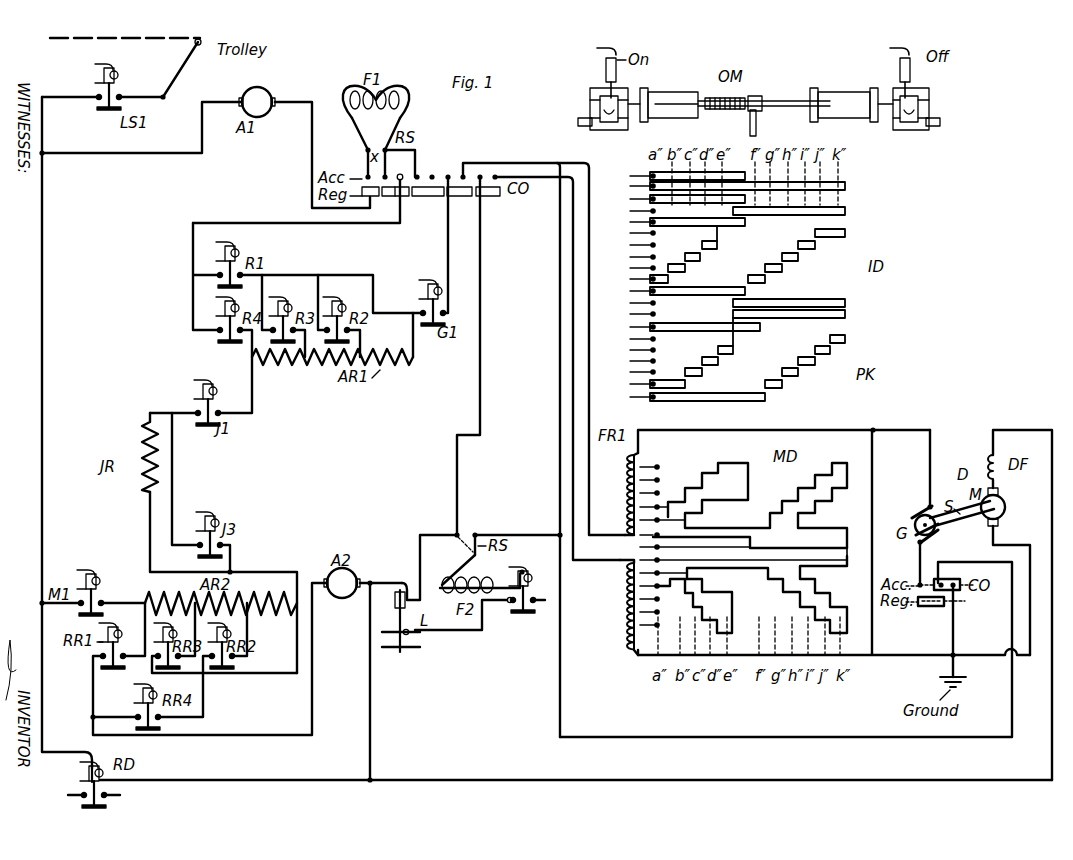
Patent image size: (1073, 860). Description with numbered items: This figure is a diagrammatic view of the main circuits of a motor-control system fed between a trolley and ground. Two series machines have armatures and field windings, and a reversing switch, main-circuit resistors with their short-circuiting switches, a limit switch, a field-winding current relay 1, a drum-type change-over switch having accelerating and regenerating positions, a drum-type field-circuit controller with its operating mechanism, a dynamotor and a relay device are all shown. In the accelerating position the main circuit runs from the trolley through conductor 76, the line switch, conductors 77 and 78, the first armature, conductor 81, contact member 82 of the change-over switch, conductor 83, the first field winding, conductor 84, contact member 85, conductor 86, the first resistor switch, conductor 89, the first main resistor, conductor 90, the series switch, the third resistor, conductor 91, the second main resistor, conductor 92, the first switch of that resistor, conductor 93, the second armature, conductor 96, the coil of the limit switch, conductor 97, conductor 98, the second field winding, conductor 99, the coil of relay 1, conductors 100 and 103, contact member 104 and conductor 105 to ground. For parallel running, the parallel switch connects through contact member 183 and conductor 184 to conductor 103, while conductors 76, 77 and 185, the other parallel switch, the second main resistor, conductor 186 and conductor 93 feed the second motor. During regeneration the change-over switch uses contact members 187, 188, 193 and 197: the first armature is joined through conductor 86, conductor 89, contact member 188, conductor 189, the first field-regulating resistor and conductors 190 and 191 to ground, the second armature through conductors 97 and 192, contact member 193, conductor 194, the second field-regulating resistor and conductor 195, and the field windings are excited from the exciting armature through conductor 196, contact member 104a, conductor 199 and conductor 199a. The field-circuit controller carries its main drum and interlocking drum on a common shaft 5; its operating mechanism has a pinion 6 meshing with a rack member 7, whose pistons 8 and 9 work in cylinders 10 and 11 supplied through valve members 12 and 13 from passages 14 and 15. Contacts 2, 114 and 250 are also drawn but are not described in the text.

The field-winding current relay 1 is at (540, 589).
The contact 2 is at (522, 598).
The shaft 5 is at (750, 122).
The pinion 6 is at (758, 96).
The rack member 7 is at (764, 93).
The piston 8 is at (648, 90).
The piston 9 is at (826, 90).
The operating cylinder 10 is at (672, 92).
The operating cylinder 11 is at (850, 92).
The valve member 12 is at (590, 104).
The valve member 13 is at (933, 104).
The pipe or passage 14 is at (581, 128).
The pipe or passage 15 is at (941, 129).
The conductor 76 is at (128, 96).
The conductor 77 is at (75, 100).
The conductor 78 is at (116, 154).
The conductor 81 is at (312, 157).
The contact member 82 is at (385, 163).
The conductor 83 is at (366, 158).
The conductor 84 is at (412, 172).
The contact member 85 is at (401, 174).
The conductor 86 is at (400, 223).
The conductor 89 is at (296, 275).
The conductor 90 is at (254, 391).
The conductor 91 is at (257, 572).
The conductor 92 is at (146, 638).
The conductor 93 is at (92, 723).
The conductor 96 is at (381, 670).
The conductor 97 is at (420, 566).
The conductor 98 is at (457, 556).
The conductor 99 is at (509, 571).
The conductor 100 is at (519, 526).
The conductor 103 is at (474, 699).
The contact member 104 is at (944, 580).
The contact member 104a is at (926, 606).
The conductor 105 is at (952, 634).
The contact 114 is at (412, 636).
The contact member 183 is at (446, 176).
The conductor 184 is at (467, 163).
The conductor 185 is at (46, 432).
The conductor 186 is at (224, 675).
The contact member 187 is at (425, 197).
The contact member 188 is at (466, 197).
The conductor 189 is at (513, 163).
The conductor 190 is at (834, 542).
The conductor 191 is at (874, 489).
The conductor 192 is at (457, 504).
The contact member 193 is at (487, 197).
The conductor 194 is at (572, 300).
The conductor 195 is at (632, 655).
The conductor 196 is at (432, 175).
The contact member 197 is at (365, 197).
The conductor 199 is at (919, 559).
The conductor 199a is at (930, 463).
The contact 250 is at (398, 650).